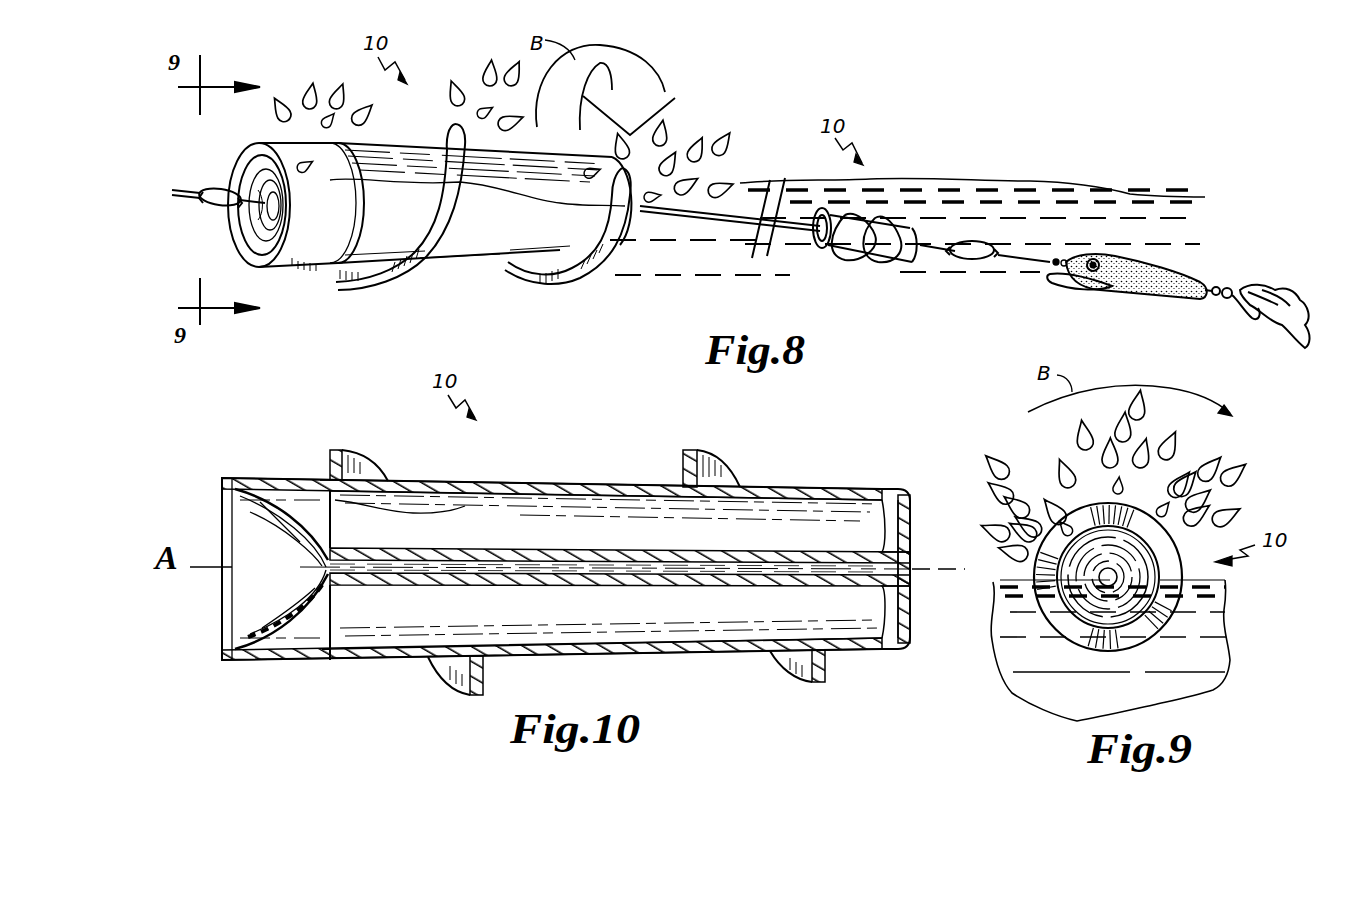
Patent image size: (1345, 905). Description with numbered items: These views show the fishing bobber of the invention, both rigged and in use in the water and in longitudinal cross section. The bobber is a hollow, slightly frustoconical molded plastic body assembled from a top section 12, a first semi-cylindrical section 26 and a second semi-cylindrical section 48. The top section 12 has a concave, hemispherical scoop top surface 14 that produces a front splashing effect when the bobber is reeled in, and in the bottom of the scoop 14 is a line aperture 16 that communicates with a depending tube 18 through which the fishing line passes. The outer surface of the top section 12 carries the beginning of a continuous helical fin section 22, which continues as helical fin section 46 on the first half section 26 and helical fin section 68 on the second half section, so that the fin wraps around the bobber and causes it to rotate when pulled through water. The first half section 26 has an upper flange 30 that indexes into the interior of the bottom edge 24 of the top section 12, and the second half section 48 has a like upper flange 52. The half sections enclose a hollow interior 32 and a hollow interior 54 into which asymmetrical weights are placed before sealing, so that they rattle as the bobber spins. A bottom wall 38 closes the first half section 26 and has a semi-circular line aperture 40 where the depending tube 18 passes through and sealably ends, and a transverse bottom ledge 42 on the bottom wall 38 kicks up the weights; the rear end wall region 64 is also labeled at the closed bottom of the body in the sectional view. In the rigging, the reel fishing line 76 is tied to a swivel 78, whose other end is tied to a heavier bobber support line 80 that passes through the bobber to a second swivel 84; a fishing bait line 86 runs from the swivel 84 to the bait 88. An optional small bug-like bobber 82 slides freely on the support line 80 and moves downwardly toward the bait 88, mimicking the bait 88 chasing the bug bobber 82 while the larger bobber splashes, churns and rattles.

In FIG. 8, the top section 12 is at (292, 268).
In FIG. 10, the top section 12 is at (293, 480).
In FIG. 9, the top section 12 is at (1160, 565).
In FIG. 8, the scoop top surface 14 is at (245, 232).
In FIG. 10, the scoop top surface 14 is at (255, 530).
In FIG. 9, the scoop top surface 14 is at (1140, 566).
In FIG. 10, the line aperture 16 is at (330, 548).
In FIG. 9, the line aperture 16 is at (1112, 565).
In FIG. 10, the depending tube 18 is at (522, 553).
In FIG. 9, the helical fin section 22 is at (1085, 518).
In FIG. 10, the bottom edge 24 is at (418, 512).
In FIG. 10, the first semi-cylindrical section 26 is at (675, 652).
In FIG. 10, the upper flange 30 is at (325, 662).
In FIG. 10, the hollow interior 32 is at (585, 618).
In FIG. 10, the bottom wall 38 is at (896, 520).
In FIG. 10, the semi-circular line aperture 40 is at (914, 570).
In FIG. 10, the transverse bottom ledge 42 is at (895, 625).
In FIG. 8, the helical fin section 46 is at (545, 282).
In FIG. 10, the helical fin section 46 is at (462, 680).
In FIG. 10, the second semi-cylindrical section 48 is at (592, 485).
In FIG. 10, the upper flange 52 is at (335, 480).
In FIG. 10, the hollow interior 54 is at (472, 515).
In FIG. 10, the rear wall 64 is at (905, 545).
In FIG. 10, the helical fin section 68 is at (688, 455).
In FIG. 8, the fishing line 76 is at (180, 185).
In FIG. 9, the fishing line 76 is at (1082, 520).
In FIG. 8, the swivel 78 is at (220, 186).
In FIG. 8, the bobber support line 80 is at (700, 225).
In FIG. 8, the bug-like bobber 82 is at (872, 265).
In FIG. 8, the second swivel 84 is at (972, 262).
In FIG. 8, the fishing bait line 86 is at (1030, 265).
In FIG. 8, the bait 88 is at (1145, 300).